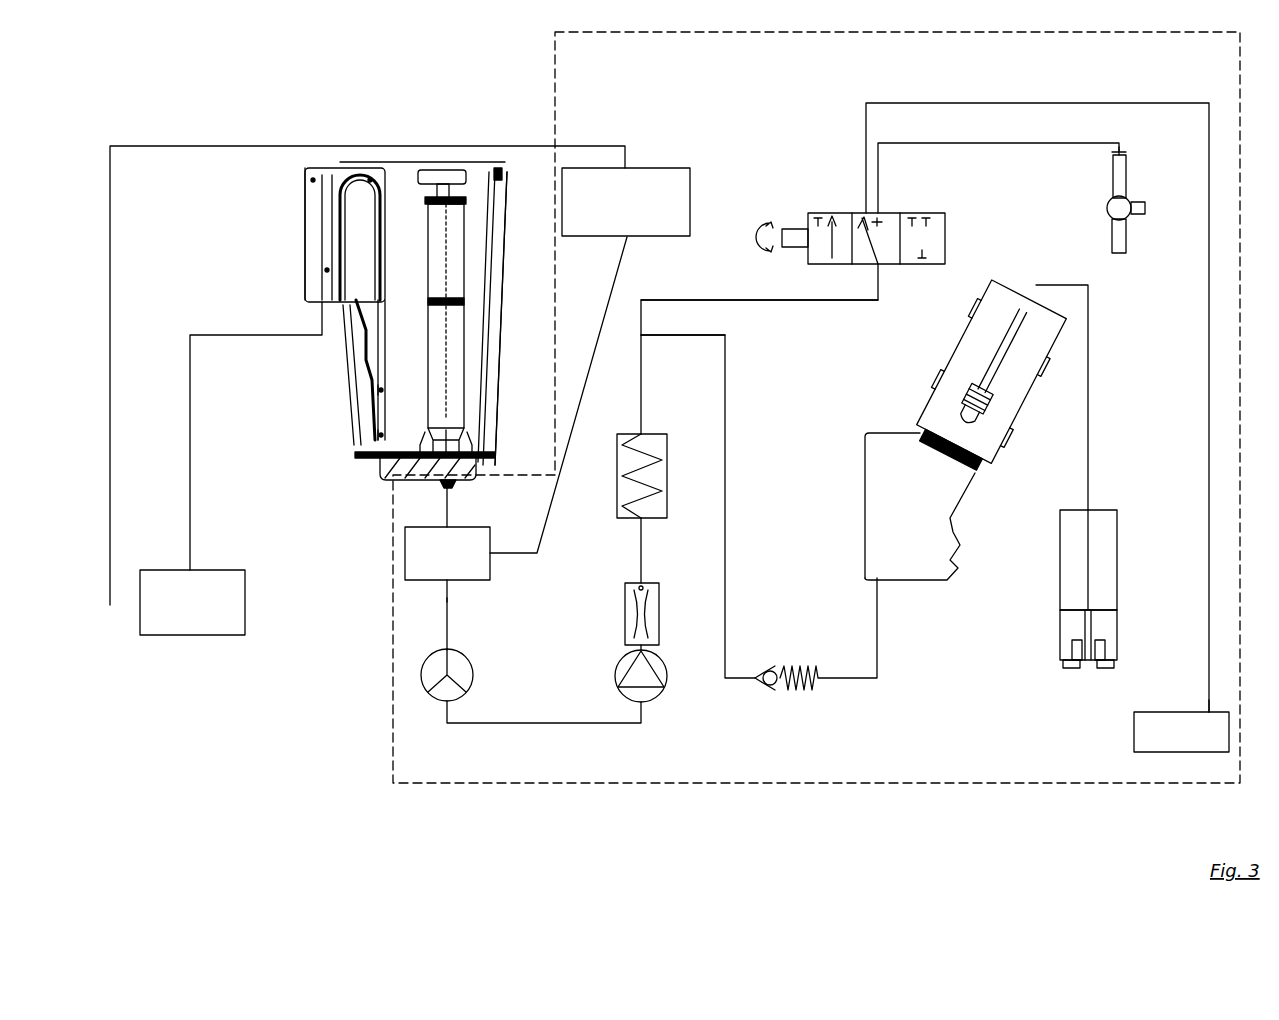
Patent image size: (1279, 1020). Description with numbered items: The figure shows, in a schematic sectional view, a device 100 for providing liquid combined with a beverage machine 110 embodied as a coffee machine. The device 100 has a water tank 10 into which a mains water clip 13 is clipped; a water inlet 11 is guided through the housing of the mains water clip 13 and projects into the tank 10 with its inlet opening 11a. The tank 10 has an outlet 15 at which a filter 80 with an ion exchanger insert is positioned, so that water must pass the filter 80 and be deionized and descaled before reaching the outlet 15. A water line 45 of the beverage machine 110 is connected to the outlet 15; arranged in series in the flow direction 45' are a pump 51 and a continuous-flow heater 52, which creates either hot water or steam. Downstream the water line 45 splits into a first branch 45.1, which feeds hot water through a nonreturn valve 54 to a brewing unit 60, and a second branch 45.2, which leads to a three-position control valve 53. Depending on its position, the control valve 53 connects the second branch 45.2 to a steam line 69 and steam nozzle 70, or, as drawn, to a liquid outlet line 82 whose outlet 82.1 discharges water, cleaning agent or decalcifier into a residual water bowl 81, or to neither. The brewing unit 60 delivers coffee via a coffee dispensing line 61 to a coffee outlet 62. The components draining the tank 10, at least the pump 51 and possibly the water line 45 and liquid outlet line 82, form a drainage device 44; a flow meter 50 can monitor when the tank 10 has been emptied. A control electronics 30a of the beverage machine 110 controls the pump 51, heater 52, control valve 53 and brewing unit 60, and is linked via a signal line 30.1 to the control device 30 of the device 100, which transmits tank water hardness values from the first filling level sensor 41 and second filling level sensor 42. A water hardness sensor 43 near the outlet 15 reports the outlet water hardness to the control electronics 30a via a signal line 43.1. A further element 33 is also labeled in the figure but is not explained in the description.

The water tank 10 is at (483, 357).
The water inlet 11 is at (356, 256).
The inlet opening 11a is at (352, 345).
The mains water clip 13 is at (305, 195).
The outlet 15 is at (432, 488).
The control device 30 is at (185, 620).
The signal line 30.1 is at (110, 442).
The control electronics 30a is at (628, 205).
The control line 33 is at (192, 446).
The first filling level sensor 41 is at (380, 435).
The second filling level sensor 42 is at (380, 390).
The water hardness sensor 43 is at (487, 577).
The signal line 43.1 is at (526, 556).
The drainage device 44 is at (663, 748).
The water line 45 is at (602, 515).
The flow direction 45' is at (463, 613).
The first branch 45.1 is at (690, 338).
The second branch 45.2 is at (680, 300).
The flow meter 50 is at (463, 665).
The pump 51 is at (660, 700).
The continuous-flow heater 52 is at (628, 498).
The control valve 53 is at (850, 213).
The nonreturn valve 54 is at (793, 700).
The brewing unit 60 is at (910, 530).
The coffee dispensing line 61 is at (1090, 387).
The coffee outlet 62 is at (1103, 583).
The steam line 69 is at (1000, 144).
The steam nozzle 70 is at (1125, 232).
The filter 80 is at (462, 250).
The residual water bowl 81 is at (1133, 740).
The liquid outlet line 82 is at (866, 128).
The outlet 82.1 is at (1206, 702).
The device 100 is at (328, 377).
The beverage machine 110 is at (1238, 96).